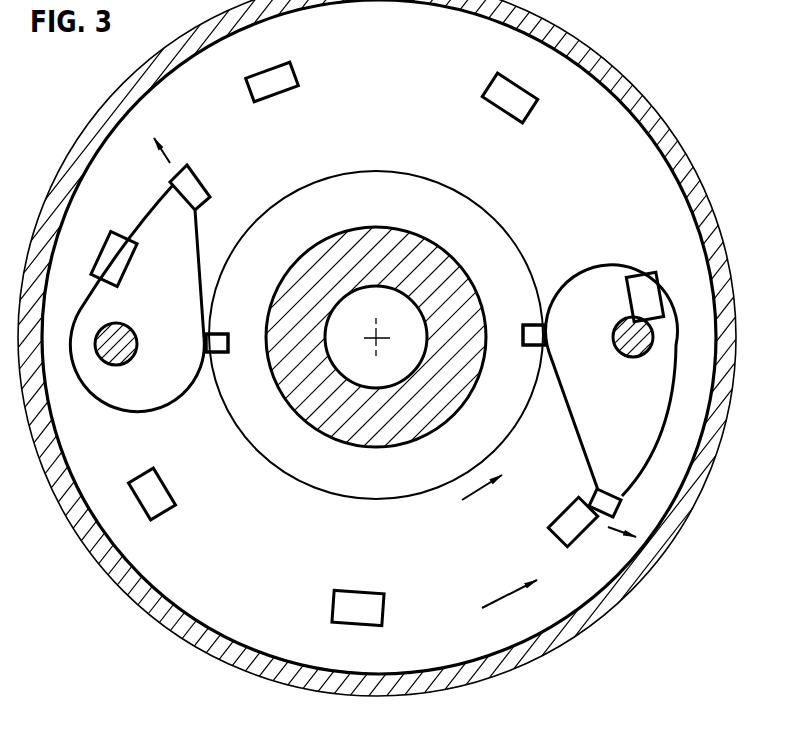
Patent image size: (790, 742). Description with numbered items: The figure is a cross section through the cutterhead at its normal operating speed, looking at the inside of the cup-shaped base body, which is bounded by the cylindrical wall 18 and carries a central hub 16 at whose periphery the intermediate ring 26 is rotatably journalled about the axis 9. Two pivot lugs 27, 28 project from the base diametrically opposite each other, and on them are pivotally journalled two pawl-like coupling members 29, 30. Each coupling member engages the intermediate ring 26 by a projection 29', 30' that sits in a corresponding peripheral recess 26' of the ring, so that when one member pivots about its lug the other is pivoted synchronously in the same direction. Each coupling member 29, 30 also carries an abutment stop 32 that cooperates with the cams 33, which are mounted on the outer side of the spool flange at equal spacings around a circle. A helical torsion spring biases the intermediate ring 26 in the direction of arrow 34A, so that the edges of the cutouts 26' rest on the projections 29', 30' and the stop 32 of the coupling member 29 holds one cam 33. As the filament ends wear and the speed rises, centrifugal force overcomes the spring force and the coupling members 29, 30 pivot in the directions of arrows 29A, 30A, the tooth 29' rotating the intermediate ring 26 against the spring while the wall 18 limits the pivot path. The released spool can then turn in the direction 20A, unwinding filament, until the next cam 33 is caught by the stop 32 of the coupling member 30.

The cylindrical wall 18 is at (128, 88).
The intermediate ring 26 is at (376, 320).
The central hub 16 is at (405, 240).
The axis 9 is at (375, 337).
The coupling member 30 is at (137, 293).
The pivot lug 28 is at (128, 328).
The abutment stop 32 is at (209, 196).
The pivot direction of coupling member 30 30A is at (166, 156).
The projection 30' is at (232, 322).
The peripheral recess 26' is at (375, 356).
The projection 29' is at (519, 318).
The coupling member 29 is at (613, 380).
The pivot lug 27 is at (628, 357).
The pivot direction of coupling member 29 29A is at (618, 530).
The spring bias direction 34A is at (470, 495).
The spool rotation direction 20A is at (510, 594).
The cams 33 is at (290, 76).